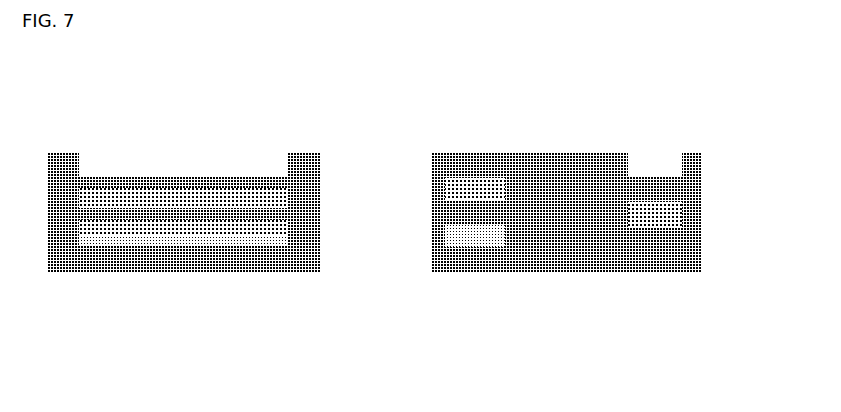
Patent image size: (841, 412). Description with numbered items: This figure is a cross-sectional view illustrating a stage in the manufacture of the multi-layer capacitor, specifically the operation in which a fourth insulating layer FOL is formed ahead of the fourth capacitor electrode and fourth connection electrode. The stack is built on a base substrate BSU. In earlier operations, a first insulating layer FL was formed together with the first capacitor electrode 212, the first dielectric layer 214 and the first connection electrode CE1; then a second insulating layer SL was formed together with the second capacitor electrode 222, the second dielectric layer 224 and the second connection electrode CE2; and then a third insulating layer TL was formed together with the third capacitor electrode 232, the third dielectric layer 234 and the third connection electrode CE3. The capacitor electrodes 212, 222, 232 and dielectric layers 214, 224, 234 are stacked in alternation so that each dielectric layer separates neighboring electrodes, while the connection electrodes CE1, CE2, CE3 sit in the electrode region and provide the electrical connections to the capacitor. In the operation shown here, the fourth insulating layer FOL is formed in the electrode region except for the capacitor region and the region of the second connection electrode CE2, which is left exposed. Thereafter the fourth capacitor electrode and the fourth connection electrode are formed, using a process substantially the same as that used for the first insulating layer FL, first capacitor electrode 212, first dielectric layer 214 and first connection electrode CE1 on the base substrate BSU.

The first capacitor electrode 212 is at (98, 238).
The first dielectric layer 214 is at (120, 232).
The second capacitor electrode 222 is at (123, 212).
The second dielectric layer 224 is at (155, 205).
The third capacitor electrode 232 is at (200, 193).
The third dielectric layer 234 is at (234, 180).
The base substrate BSU is at (683, 265).
The first connection electrode CE1 is at (487, 237).
The second connection electrode CE2 is at (653, 230).
The third connection electrode CE3 is at (474, 192).
The third insulating layer TL is at (526, 172).
The fourth insulating layer FOL is at (559, 170).
The first insulating layer FL is at (563, 237).
The second insulating layer SL is at (634, 185).